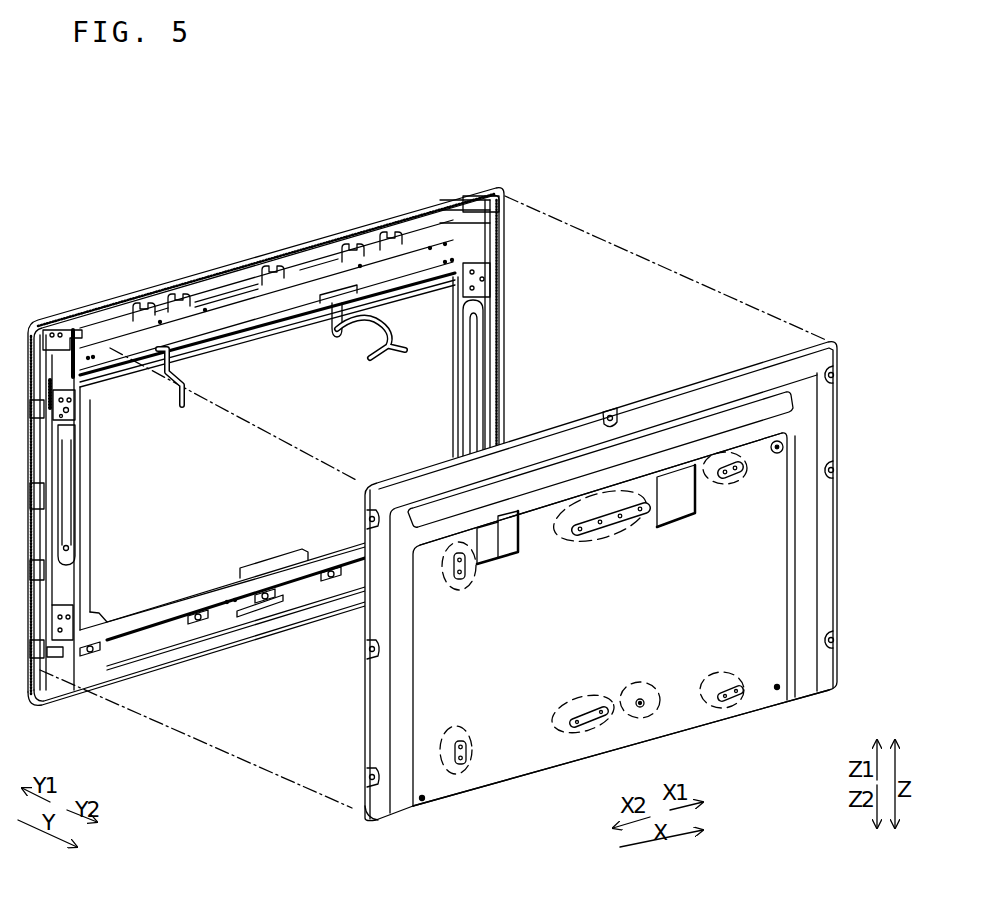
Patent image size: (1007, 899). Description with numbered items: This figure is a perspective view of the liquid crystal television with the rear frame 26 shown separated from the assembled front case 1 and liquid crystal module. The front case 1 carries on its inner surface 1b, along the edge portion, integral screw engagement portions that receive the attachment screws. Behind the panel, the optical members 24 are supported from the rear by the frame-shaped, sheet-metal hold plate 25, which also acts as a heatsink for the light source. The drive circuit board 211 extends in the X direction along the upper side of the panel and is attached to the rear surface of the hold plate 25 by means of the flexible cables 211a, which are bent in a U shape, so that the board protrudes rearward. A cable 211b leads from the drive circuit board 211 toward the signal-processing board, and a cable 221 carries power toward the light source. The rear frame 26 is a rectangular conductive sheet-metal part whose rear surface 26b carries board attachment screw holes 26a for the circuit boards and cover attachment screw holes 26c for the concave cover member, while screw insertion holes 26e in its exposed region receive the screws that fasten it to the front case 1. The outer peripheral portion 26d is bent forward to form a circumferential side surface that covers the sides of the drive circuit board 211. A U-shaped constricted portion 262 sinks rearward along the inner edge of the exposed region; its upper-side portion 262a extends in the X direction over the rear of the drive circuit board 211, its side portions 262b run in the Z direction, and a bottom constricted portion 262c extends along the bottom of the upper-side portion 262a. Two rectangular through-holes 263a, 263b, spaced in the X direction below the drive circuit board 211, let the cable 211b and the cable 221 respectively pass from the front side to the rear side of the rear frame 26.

The front case 1 is at (80, 694).
The inner surface 1b is at (205, 638).
The optical members 24 is at (420, 367).
The hold plate 25 is at (77, 580).
The drive circuit board 211 is at (278, 305).
The flexible cables 211a is at (105, 318).
The cable 211b is at (387, 357).
The cable 221 is at (170, 405).
The rear frame 26 is at (473, 782).
The board attachment screw holes 26a is at (462, 570).
The rear surface 26b is at (432, 694).
The cover attachment screw holes 26c is at (423, 802).
The outer peripheral portion 26d is at (363, 807).
The screw insertion holes 26e is at (370, 520).
The constricted portion 262 is at (805, 690).
The upper-side portion of the constricted portion 262a is at (688, 410).
The side portions of the constricted portion 262b is at (405, 735).
The bottom constricted portion 262c is at (565, 462).
The through-hole 263a is at (680, 528).
The through-hole 263b is at (517, 562).